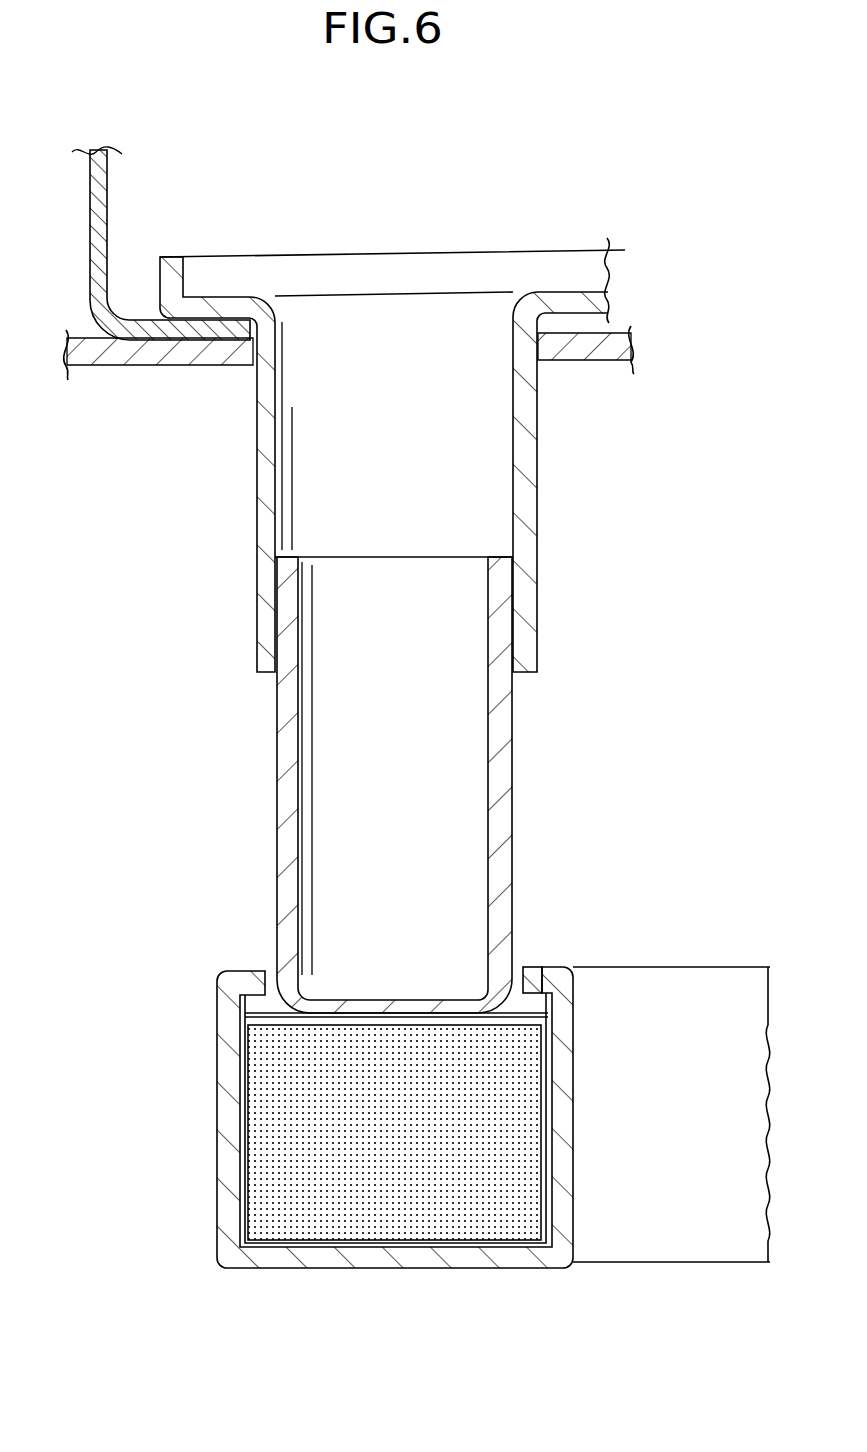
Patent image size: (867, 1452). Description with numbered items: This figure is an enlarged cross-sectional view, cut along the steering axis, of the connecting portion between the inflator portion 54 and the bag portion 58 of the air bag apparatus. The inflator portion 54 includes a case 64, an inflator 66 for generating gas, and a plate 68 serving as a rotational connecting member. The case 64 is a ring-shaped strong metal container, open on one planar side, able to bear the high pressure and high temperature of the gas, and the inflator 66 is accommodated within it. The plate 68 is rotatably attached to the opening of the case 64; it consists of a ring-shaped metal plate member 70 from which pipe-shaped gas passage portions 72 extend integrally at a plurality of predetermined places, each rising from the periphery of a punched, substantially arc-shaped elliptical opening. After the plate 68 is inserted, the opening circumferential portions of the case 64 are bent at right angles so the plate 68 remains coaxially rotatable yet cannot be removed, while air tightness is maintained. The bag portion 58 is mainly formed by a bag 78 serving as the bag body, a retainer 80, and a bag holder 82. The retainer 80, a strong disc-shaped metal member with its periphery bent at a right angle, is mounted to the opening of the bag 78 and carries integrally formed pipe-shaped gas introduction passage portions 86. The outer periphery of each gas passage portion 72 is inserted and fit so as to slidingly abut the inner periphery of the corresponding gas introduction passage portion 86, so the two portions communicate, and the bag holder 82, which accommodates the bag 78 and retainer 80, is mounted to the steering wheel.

The inflator portion 54 is at (334, 1120).
The bag portion 58 is at (392, 389).
The case 64 is at (213, 1145).
The inflator 66 is at (260, 1085).
The plate 68 is at (479, 785).
The ring-shaped metal plate member 70 is at (537, 967).
The gas passage portion 72 is at (502, 843).
The bag 78 is at (88, 213).
The retainer 80 is at (542, 265).
The bag holder 82 is at (587, 362).
The gas introduction passage portion 86 is at (385, 327).